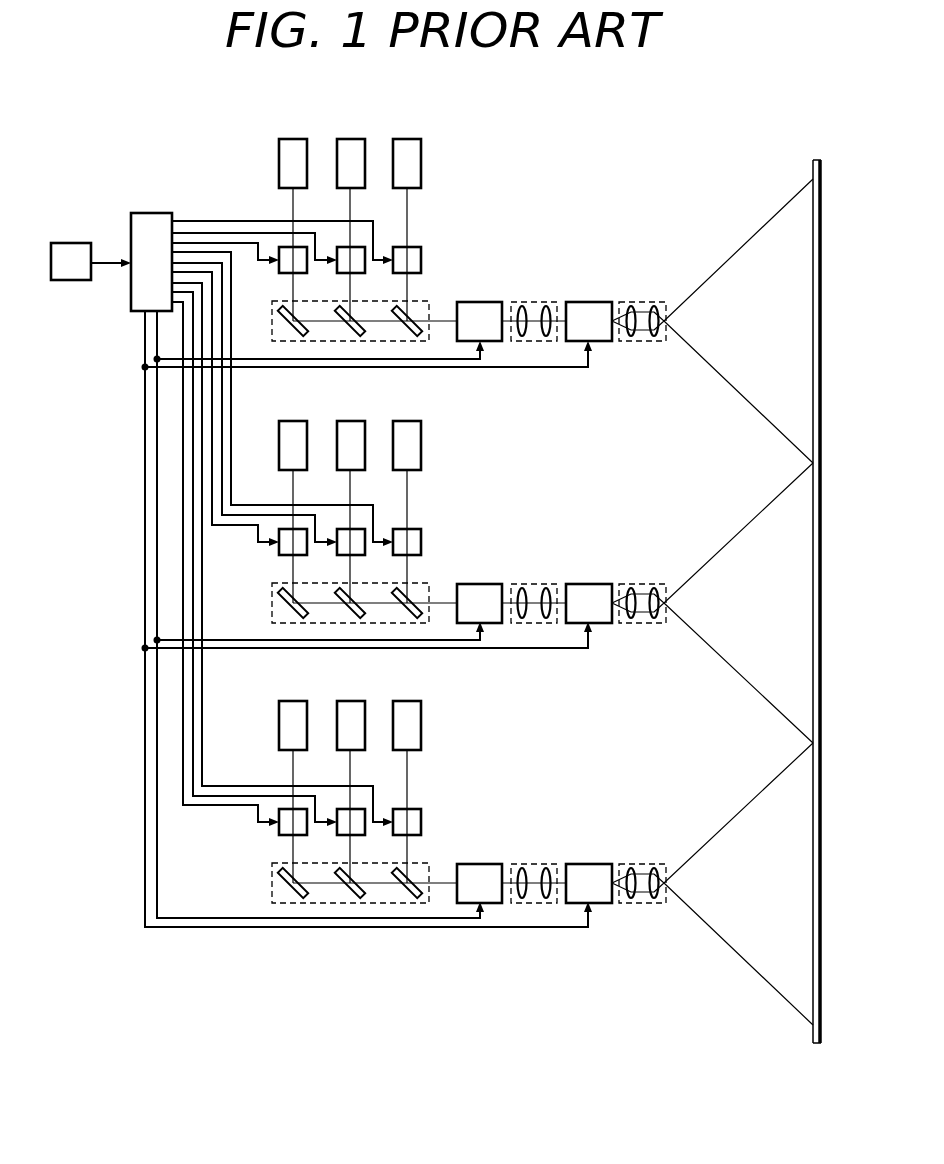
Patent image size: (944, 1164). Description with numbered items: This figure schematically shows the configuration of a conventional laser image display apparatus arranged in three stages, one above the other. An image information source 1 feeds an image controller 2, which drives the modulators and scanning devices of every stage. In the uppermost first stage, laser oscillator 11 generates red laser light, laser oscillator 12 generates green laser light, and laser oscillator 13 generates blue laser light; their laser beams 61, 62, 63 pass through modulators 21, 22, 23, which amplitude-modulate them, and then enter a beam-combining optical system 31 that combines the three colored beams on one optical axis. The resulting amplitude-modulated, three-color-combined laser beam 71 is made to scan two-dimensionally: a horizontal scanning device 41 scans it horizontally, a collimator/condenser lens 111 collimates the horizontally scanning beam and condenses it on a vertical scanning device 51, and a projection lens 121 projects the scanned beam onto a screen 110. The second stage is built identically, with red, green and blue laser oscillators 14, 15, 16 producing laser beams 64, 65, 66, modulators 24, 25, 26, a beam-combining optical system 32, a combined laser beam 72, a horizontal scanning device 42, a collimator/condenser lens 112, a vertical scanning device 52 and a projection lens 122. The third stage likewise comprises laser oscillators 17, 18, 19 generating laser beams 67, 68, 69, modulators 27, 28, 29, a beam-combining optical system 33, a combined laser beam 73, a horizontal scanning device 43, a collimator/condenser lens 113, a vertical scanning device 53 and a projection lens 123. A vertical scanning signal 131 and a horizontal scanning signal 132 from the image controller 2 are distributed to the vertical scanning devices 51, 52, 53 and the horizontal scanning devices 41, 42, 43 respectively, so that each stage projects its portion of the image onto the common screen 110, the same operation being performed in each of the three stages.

The image information source 1 is at (78, 243).
The image controller 2 is at (152, 213).
The laser oscillator 11 is at (293, 138).
The laser oscillator 12 is at (350, 138).
The laser oscillator 13 is at (407, 138).
The laser oscillator 14 is at (293, 420).
The laser oscillator 15 is at (350, 420).
The laser oscillator 16 is at (407, 420).
The laser oscillator 17 is at (293, 700).
The laser oscillator 18 is at (350, 700).
The laser oscillator 19 is at (407, 700).
The modulator 21 is at (284, 274).
The modulator 22 is at (342, 274).
The modulator 23 is at (398, 274).
The modulator 24 is at (284, 556).
The modulator 25 is at (342, 556).
The modulator 26 is at (398, 556).
The modulator 27 is at (284, 836).
The modulator 28 is at (342, 836).
The modulator 29 is at (398, 836).
The beam-combining optical system 31 is at (272, 320).
The beam-combining optical system 32 is at (272, 602).
The beam-combining optical system 33 is at (272, 882).
The horizontal scanning device 41 is at (480, 301).
The horizontal scanning device 42 is at (480, 583).
The horizontal scanning device 43 is at (480, 863).
The vertical scanning device 51 is at (588, 302).
The vertical scanning device 52 is at (588, 584).
The vertical scanning device 53 is at (588, 864).
The laser beam 61 is at (294, 213).
The laser beam 62 is at (351, 213).
The laser beam 63 is at (408, 213).
The laser beam 64 is at (294, 495).
The laser beam 65 is at (351, 495).
The laser beam 66 is at (408, 495).
The laser beam 67 is at (294, 775).
The laser beam 68 is at (351, 775).
The laser beam 69 is at (408, 775).
The laser beam 71 is at (438, 318).
The laser beam 72 is at (438, 600).
The laser beam 73 is at (438, 880).
The screen 110 is at (812, 170).
The collimator/condenser lens 111 is at (531, 302).
The collimator/condenser lens 112 is at (531, 584).
The collimator/condenser lens 113 is at (531, 864).
The projection lens 121 is at (638, 302).
The projection lens 122 is at (638, 584).
The projection lens 123 is at (638, 864).
The vertical scanning signal 131 is at (144, 447).
The horizontal scanning signal 132 is at (157, 480).